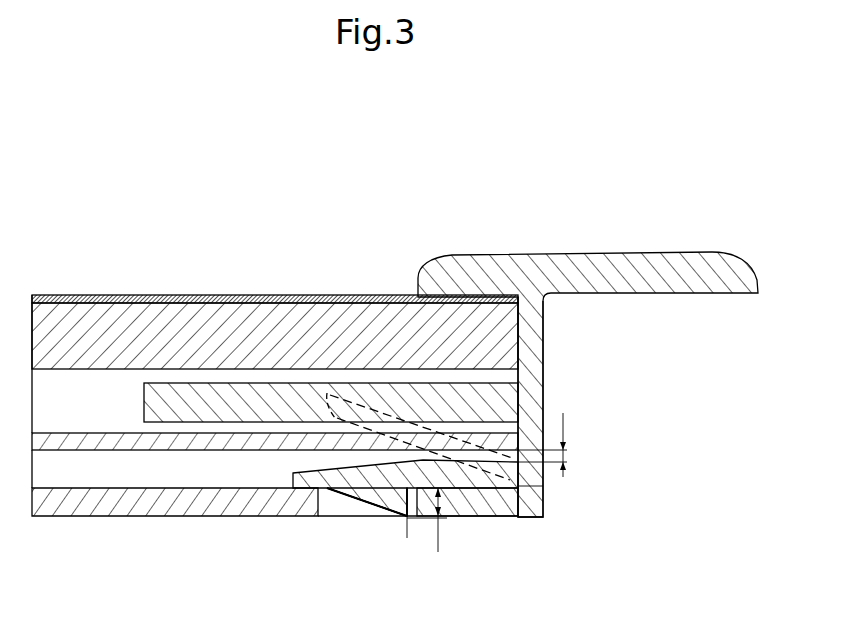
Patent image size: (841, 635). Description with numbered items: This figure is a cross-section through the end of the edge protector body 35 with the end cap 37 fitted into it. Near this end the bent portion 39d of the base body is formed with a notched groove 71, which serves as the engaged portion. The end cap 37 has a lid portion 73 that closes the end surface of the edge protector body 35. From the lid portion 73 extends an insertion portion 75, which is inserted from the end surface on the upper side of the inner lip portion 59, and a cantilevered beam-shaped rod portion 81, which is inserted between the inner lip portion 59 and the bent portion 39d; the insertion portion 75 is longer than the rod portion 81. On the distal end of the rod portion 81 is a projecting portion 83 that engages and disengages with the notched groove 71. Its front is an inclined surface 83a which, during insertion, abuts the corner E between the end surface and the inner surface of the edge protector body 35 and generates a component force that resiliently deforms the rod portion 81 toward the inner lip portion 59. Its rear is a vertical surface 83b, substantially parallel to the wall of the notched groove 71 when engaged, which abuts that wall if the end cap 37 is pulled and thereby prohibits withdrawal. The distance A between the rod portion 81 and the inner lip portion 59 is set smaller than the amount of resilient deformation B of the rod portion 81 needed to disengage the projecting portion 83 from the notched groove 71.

The edge protector body 35 is at (260, 292).
The end cap 37 is at (620, 250).
The lid portion 73 is at (532, 398).
The insertion portion 75 is at (190, 410).
The inner lip portion 59 is at (155, 442).
The bent portion 39d is at (265, 504).
The notched groove 71 is at (330, 500).
The projecting portion 83 is at (388, 500).
The inclined surface 83a is at (347, 498).
The vertical surface 83b is at (408, 494).
The rod portion 81 is at (487, 494).
The distance between rod portion and inner lip portion A is at (551, 445).
The amount of resilient deformation of rod portion B is at (430, 520).
The corner E is at (523, 488).